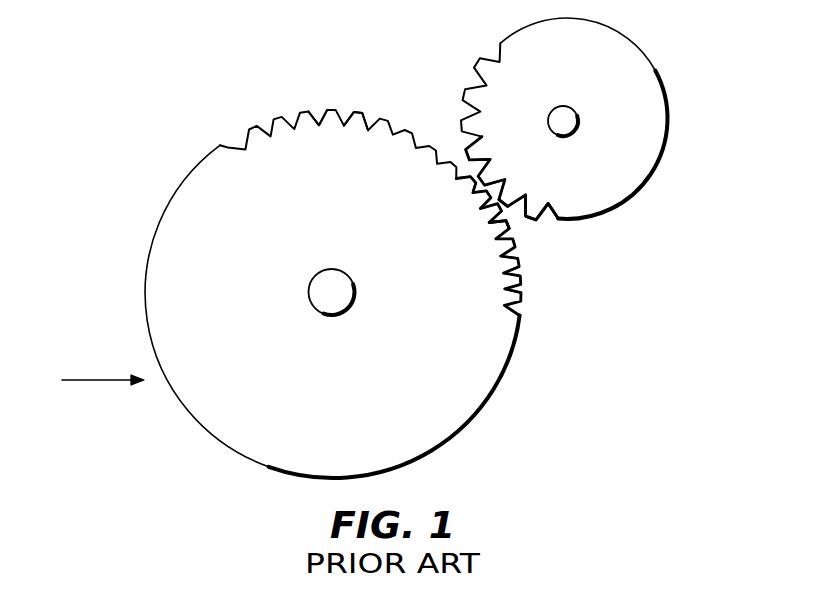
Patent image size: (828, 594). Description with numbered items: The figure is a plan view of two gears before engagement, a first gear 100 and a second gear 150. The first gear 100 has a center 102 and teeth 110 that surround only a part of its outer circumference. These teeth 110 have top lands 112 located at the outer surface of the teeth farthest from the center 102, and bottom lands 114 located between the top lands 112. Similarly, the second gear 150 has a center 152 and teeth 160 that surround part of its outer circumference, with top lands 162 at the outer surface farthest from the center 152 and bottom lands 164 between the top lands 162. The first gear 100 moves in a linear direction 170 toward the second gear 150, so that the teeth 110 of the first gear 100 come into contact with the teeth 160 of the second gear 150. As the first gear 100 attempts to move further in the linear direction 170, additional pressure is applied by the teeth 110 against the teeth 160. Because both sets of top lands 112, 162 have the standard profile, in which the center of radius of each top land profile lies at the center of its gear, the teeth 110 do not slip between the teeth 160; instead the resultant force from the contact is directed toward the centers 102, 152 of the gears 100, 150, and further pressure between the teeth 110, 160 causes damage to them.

The first gear 100 is at (333, 244).
The center 102 is at (356, 289).
The teeth 110 is at (351, 54).
The top lands 112 is at (358, 113).
The bottom lands 114 is at (320, 125).
The second gear 150 is at (578, 119).
The center 152 is at (579, 113).
The teeth 160 is at (532, 252).
The top lands 162 is at (528, 213).
The bottom lands 164 is at (547, 203).
The linear direction 170 is at (95, 380).